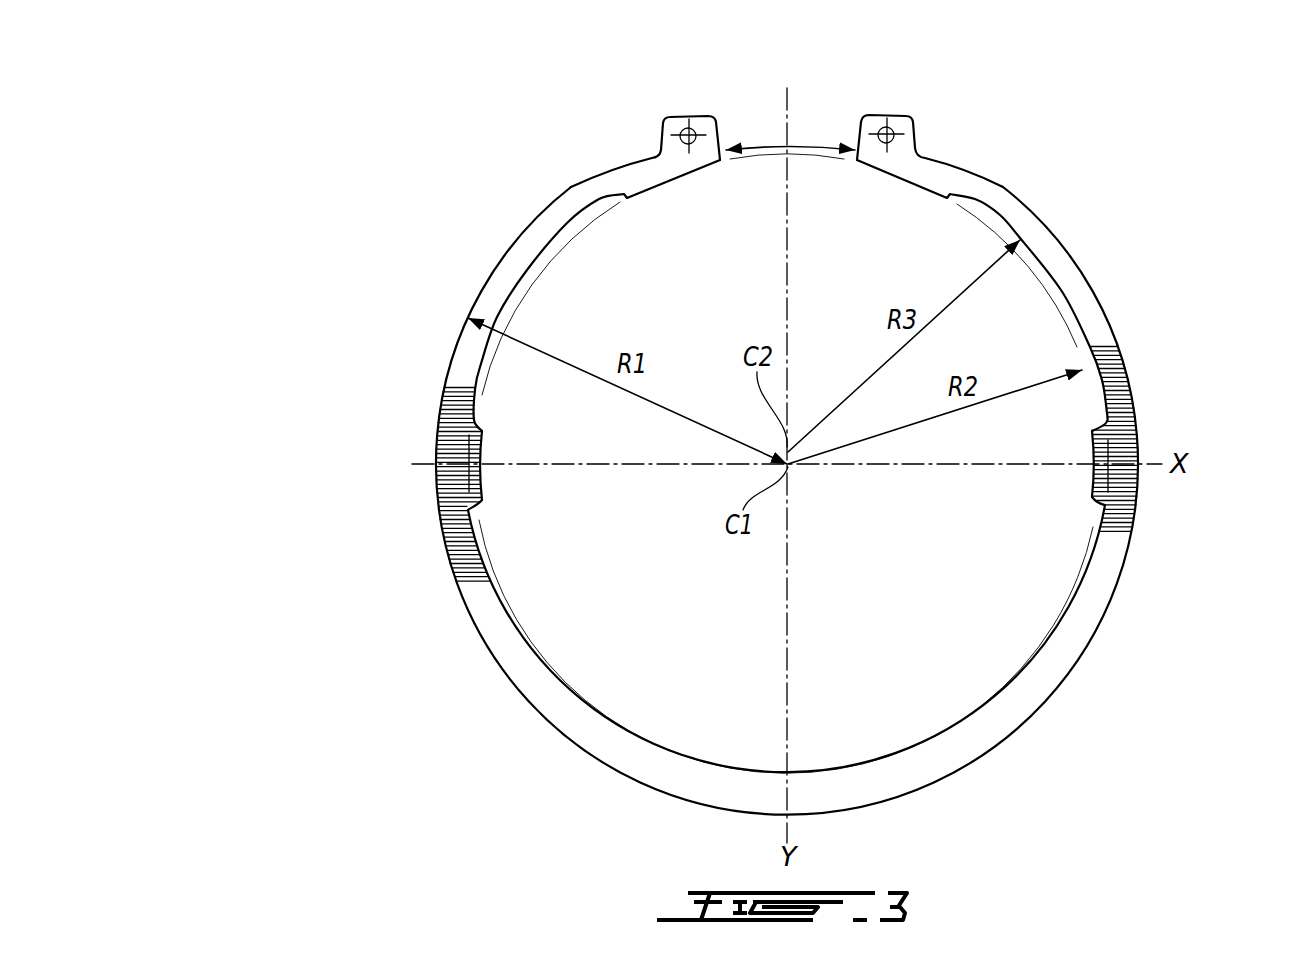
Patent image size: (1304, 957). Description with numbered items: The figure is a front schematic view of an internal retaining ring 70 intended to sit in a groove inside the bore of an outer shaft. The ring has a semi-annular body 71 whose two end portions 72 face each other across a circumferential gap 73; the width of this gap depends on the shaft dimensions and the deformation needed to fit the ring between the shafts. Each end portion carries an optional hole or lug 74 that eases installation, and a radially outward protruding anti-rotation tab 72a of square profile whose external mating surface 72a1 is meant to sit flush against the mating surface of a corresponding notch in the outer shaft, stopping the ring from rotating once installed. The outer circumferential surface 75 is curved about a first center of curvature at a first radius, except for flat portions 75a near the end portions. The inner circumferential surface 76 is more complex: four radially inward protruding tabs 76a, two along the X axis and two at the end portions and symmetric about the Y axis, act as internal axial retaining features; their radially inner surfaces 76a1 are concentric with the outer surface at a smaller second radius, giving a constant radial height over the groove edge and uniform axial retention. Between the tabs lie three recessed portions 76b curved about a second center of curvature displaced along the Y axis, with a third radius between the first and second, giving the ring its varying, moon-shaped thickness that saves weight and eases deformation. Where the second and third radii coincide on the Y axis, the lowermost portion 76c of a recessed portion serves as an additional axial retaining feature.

The internal retaining ring 70 is at (283, 163).
The semi-annular body 71 is at (489, 583).
The end portions 72 is at (728, 128).
The radially outward protruding anti-rotation tabs 72a is at (668, 118).
The external mating surface 72a1 is at (915, 135).
The circumferential gap 73 is at (793, 148).
The holes or lugs 74 is at (689, 128).
The outer circumferential surface 75 is at (1085, 265).
The flat portions 75a is at (643, 152).
The inner circumferential surface 76 is at (1020, 612).
The radially inward protruding tabs 76a is at (660, 182).
The radially inner surfaces 76a1 is at (470, 492).
The recessed portions 76b is at (1082, 328).
The lowermost portion 76c is at (787, 773).